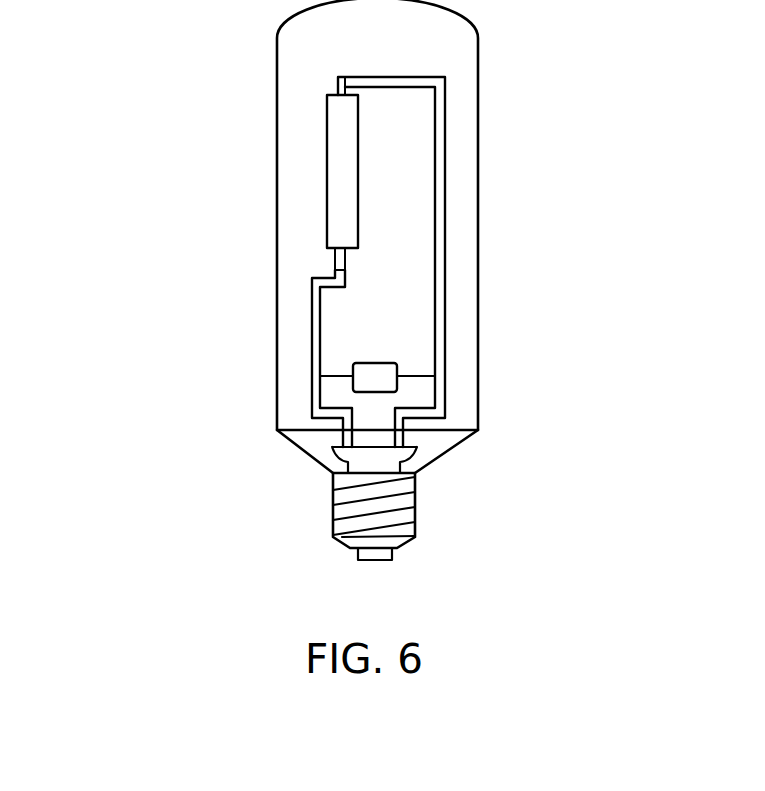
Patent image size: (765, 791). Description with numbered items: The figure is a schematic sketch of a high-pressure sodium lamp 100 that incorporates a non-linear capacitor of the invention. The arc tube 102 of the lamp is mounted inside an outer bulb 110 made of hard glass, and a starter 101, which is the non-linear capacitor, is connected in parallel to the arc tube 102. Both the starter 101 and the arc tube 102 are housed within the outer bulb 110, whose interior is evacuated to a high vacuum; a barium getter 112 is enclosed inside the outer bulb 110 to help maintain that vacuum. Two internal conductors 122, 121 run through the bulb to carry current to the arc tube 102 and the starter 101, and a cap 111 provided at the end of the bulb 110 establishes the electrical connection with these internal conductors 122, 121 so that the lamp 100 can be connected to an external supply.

The lamp 100 is at (228, 126).
The starter 101 is at (377, 362).
The arc tube 102 is at (322, 185).
The outer bulb 110 is at (478, 345).
The cap 111 is at (415, 512).
The barium getter 112 is at (450, 452).
The internal conductor 121 is at (443, 245).
The internal conductor 122 is at (311, 332).